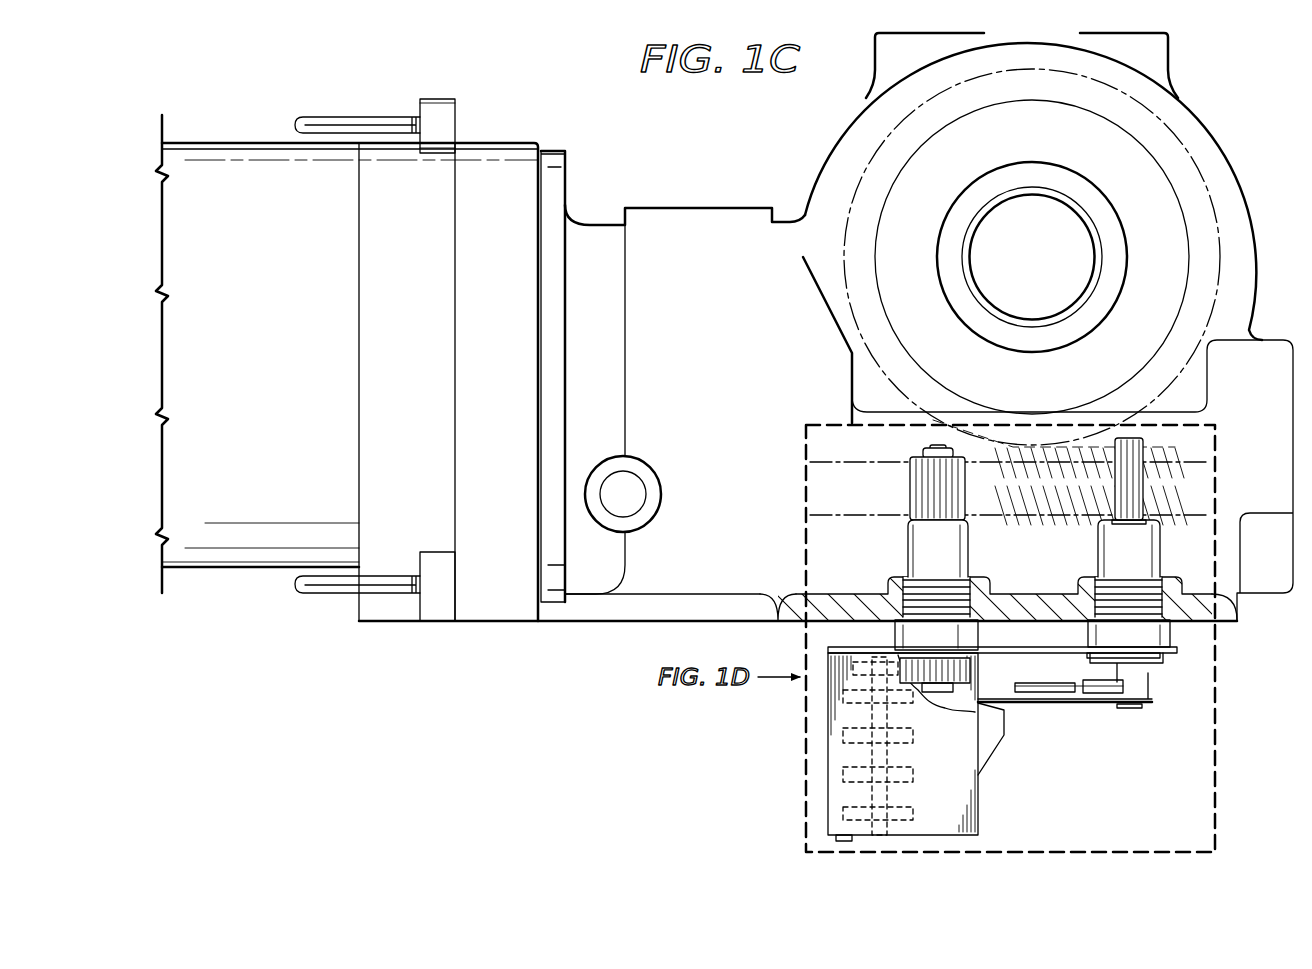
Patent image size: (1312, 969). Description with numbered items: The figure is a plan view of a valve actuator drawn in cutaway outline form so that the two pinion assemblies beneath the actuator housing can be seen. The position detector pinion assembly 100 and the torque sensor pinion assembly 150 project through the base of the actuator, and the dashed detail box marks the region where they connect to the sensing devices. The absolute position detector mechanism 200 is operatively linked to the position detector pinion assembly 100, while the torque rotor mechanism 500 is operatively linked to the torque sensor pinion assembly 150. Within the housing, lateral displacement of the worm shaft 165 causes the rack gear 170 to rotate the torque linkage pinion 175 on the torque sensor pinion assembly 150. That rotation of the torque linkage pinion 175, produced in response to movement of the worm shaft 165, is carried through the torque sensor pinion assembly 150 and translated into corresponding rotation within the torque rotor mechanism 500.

The position detector pinion assembly 100 is at (907, 545).
The torque sensor pinion assembly 150 is at (1098, 548).
The worm shaft 165 is at (1010, 490).
The rack gear 170 is at (1165, 500).
The torque linkage pinion 175 is at (1145, 452).
The absolute position detector mechanism 200 is at (822, 751).
The torque rotor mechanism 500 is at (1160, 683).